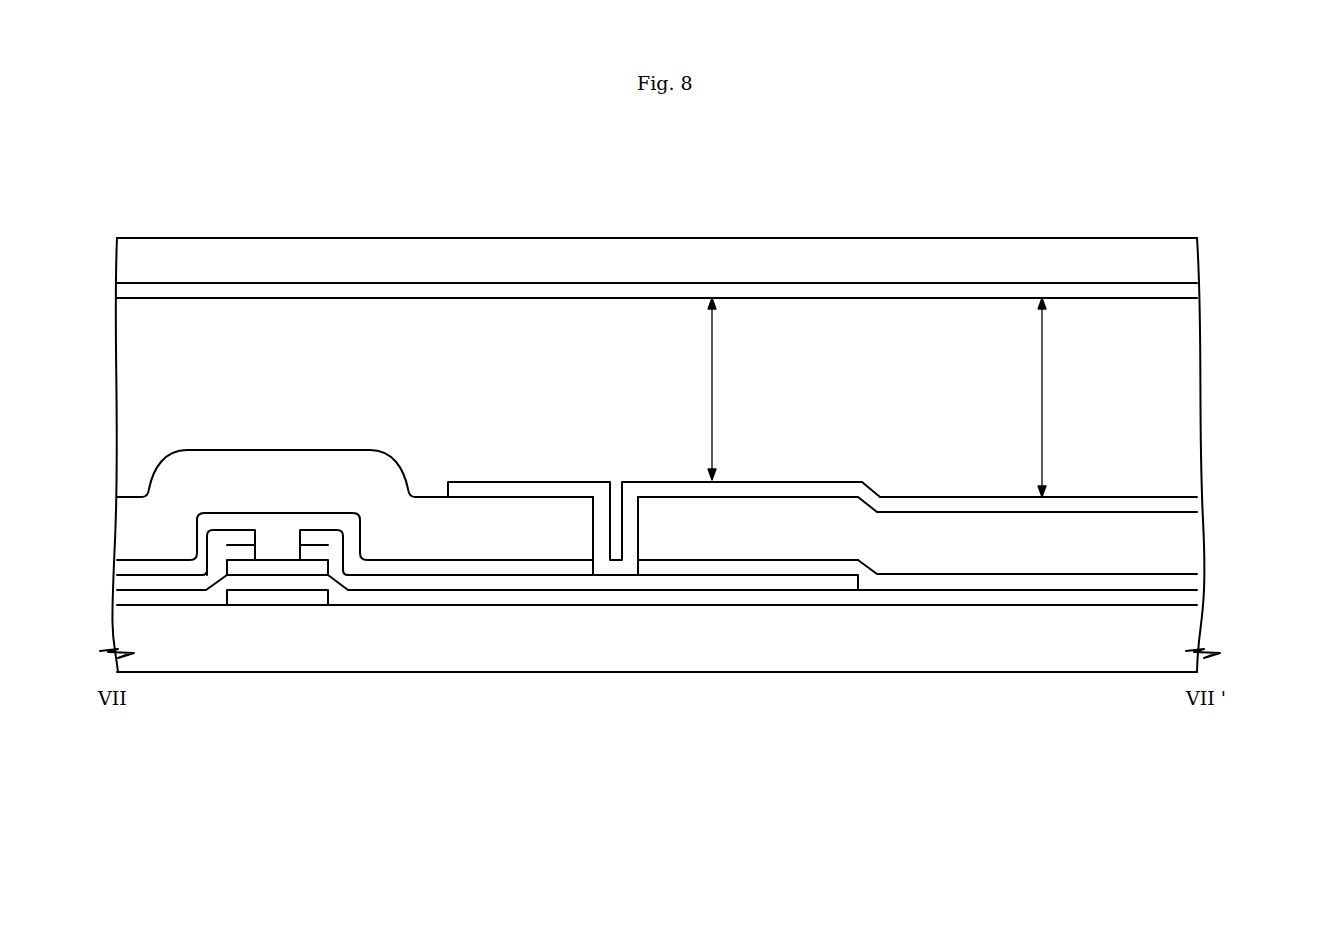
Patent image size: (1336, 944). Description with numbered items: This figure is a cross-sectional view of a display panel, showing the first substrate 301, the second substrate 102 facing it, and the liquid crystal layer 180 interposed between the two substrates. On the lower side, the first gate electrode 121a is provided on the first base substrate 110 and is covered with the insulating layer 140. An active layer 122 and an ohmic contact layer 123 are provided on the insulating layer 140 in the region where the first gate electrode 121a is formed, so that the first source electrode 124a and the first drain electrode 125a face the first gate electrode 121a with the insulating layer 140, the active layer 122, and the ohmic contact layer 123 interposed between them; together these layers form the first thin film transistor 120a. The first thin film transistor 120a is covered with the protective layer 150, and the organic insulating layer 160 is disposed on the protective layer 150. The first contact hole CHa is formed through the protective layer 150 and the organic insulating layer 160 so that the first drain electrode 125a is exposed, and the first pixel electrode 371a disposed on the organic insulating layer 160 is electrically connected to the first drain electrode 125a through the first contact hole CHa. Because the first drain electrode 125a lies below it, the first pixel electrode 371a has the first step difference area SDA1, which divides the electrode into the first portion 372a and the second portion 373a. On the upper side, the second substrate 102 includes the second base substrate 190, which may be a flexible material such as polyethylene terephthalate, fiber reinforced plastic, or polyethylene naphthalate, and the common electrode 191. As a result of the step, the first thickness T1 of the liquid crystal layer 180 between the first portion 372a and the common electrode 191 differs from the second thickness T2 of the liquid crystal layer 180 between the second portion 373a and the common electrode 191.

The second substrate 102 is at (726, 270).
The second base substrate 190 is at (1195, 262).
The common electrode 191 is at (1195, 290).
The liquid crystal layer 180 is at (1195, 400).
The first thickness T1 is at (725, 389).
The second thickness T2 is at (1055, 397).
The first substrate 301 is at (718, 569).
The first base substrate 110 is at (1195, 630).
The insulating layer 140 is at (1193, 601).
The protective layer 150 is at (1195, 585).
The organic insulating layer 160 is at (1195, 543).
The first contact hole CHa is at (638, 528).
The first pixel electrode 371a is at (822, 465).
The first portion 372a is at (790, 480).
The first step difference area SDA1 is at (880, 488).
The second portion 373a is at (1038, 458).
The first thin film transistor 120a is at (374, 649).
The first gate electrode 121a is at (278, 598).
The active layer 122 is at (312, 568).
The ohmic contact layer 123 is at (243, 553).
The first source electrode 124a is at (177, 583).
The first drain electrode 125a is at (474, 649).